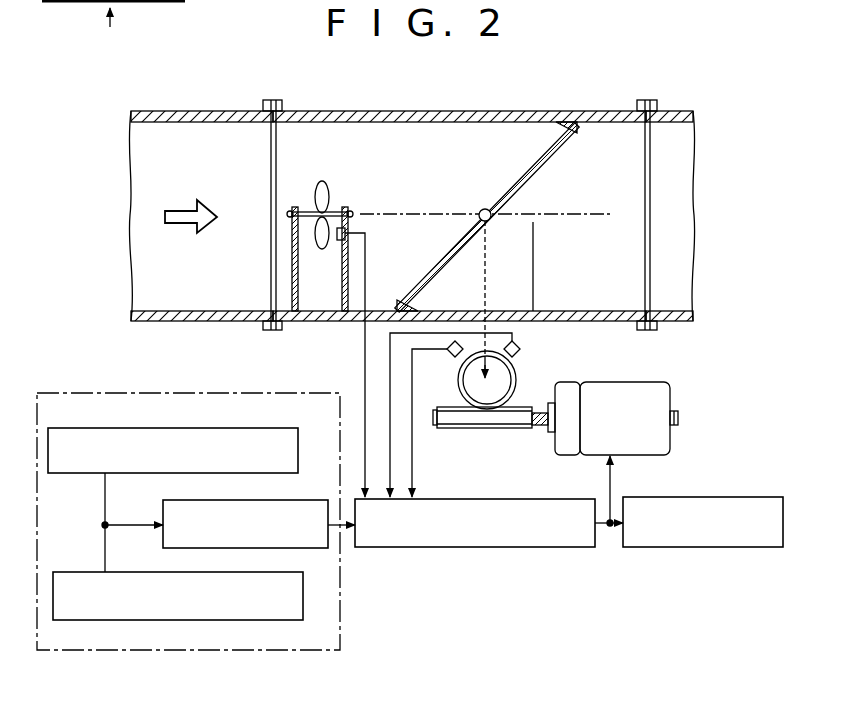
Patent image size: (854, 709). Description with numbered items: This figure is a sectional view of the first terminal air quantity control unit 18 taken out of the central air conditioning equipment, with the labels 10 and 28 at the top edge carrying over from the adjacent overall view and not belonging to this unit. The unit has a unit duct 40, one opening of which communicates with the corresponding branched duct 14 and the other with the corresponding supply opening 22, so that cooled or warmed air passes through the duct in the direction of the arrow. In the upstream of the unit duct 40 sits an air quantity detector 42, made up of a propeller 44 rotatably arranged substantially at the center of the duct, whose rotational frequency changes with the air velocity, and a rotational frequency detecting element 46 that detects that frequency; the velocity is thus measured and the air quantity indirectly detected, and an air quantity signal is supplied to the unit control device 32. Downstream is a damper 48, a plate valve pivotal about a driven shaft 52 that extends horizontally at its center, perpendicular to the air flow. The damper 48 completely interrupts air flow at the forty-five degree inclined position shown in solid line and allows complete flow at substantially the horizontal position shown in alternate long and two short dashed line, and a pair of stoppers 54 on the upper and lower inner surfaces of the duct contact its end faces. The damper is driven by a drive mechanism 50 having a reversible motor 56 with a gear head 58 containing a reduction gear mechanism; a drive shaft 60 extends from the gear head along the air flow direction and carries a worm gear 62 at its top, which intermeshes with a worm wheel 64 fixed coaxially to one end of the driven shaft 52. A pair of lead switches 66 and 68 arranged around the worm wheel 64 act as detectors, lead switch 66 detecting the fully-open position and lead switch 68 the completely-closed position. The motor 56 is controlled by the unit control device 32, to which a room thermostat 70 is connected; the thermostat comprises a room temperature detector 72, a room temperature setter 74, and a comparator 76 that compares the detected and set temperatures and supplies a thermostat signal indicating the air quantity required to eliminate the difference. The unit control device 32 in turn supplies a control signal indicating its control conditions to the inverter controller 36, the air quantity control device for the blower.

The air conditioning unit 10 is at (109, 27).
The outlet 28 is at (104, 16).
The branched duct 14 is at (216, 110).
The first terminal air quantity control unit 18 is at (418, 108).
The supply opening 22 is at (675, 111).
The unit duct 40 is at (493, 111).
The air quantity detector 42 is at (302, 188).
The propeller 44 is at (328, 193).
The rotational frequency detecting element 46 is at (339, 241).
The damper 48 is at (527, 170).
The driven shaft 52 is at (481, 210).
The stoppers 54 is at (568, 120).
The drive mechanism 50 is at (527, 397).
The reversible motor 56 is at (645, 386).
The gear head 58 is at (568, 386).
The drive shaft 60 is at (542, 426).
The worm gear 62 is at (476, 428).
The worm wheel 64 is at (464, 386).
The lead switch 66 is at (520, 352).
The lead switch 68 is at (451, 354).
The room thermostat 70 is at (340, 606).
The room temperature detector 72 is at (298, 436).
The room temperature setter 74 is at (306, 590).
The comparator 76 is at (302, 502).
The unit control device 32 is at (468, 548).
The inverter controller 36 is at (695, 548).